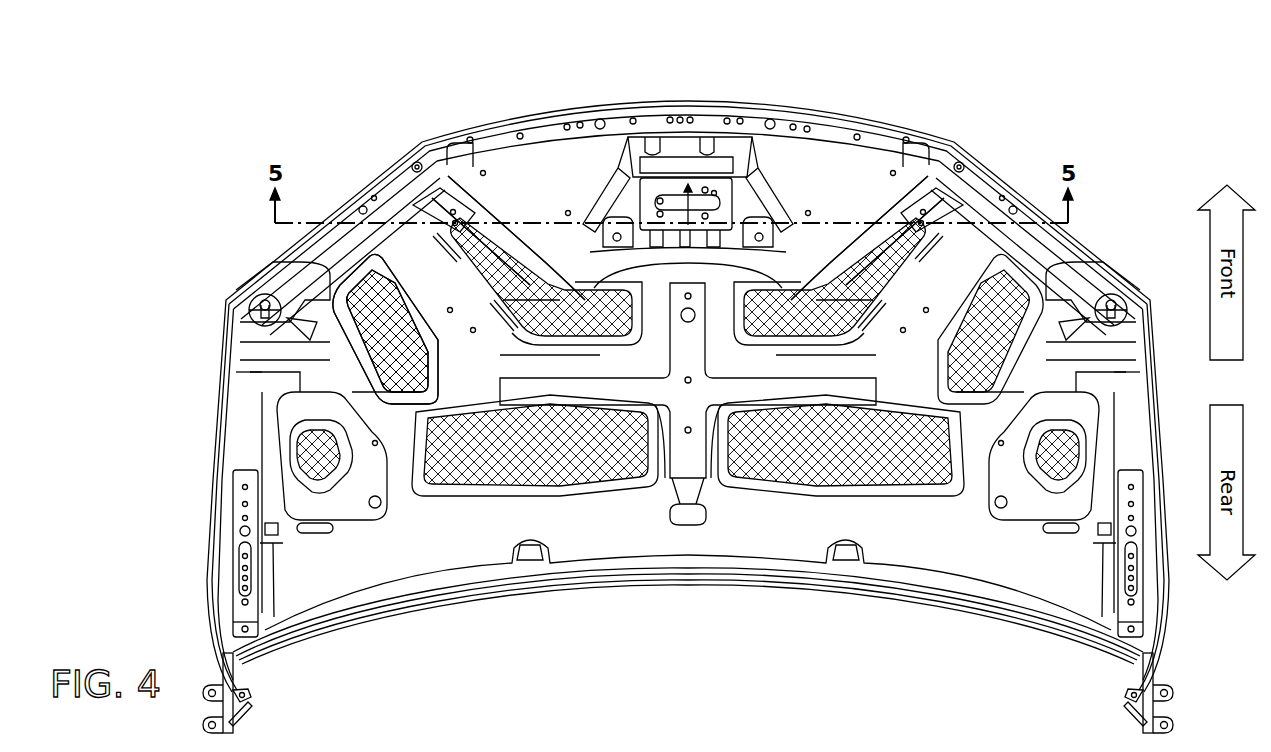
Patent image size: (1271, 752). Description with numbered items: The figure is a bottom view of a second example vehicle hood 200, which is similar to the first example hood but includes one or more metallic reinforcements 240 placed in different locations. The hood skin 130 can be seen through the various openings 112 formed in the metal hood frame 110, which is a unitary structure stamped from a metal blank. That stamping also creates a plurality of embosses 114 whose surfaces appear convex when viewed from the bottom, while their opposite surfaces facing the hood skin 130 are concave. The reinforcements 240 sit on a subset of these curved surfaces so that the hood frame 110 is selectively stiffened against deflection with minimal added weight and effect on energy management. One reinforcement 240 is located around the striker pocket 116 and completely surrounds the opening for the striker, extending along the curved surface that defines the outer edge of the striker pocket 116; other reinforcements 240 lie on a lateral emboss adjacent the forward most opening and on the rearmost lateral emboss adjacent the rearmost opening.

The second example vehicle hood 200 is at (272, 98).
The metal hood frame 110 is at (447, 122).
The openings 112 is at (377, 339).
The embosses 114 is at (587, 383).
The striker pocket 116 is at (691, 190).
The hood skin 130 is at (362, 296).
The metallic reinforcements 240 is at (500, 208).